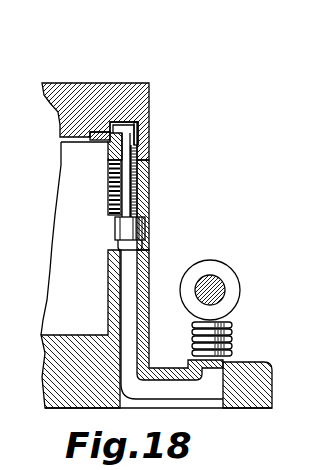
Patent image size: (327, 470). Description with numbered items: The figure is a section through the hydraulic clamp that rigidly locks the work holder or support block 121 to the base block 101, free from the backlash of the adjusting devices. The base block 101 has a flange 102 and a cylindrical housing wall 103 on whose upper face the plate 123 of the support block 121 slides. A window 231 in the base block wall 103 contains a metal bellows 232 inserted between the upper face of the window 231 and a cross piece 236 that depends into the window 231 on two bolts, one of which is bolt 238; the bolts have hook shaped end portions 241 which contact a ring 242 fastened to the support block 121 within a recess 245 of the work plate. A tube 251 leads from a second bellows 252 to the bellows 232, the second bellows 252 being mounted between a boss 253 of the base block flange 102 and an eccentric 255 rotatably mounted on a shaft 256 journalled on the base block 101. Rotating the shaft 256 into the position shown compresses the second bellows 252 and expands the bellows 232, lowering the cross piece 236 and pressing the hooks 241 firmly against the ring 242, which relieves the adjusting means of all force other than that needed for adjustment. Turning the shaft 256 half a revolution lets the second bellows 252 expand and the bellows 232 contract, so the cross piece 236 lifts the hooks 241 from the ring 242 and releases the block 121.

The base block 101 is at (52, 222).
The flange 102 is at (273, 388).
The cylindrical housing wall 103 is at (150, 267).
The support block 121 is at (40, 104).
The plate 123 is at (150, 107).
The window 231 is at (151, 223).
The metal bellows 232 is at (147, 172).
The cross piece 236 is at (118, 228).
The bolt 238 is at (142, 158).
The hook shaped end portion 241 is at (125, 122).
The ring 242 is at (97, 133).
The recess 245 is at (134, 118).
The tube 251 is at (150, 287).
The second bellows 252 is at (233, 340).
The boss 253 is at (232, 359).
The eccentric 255 is at (236, 271).
The shaft 256 is at (222, 290).